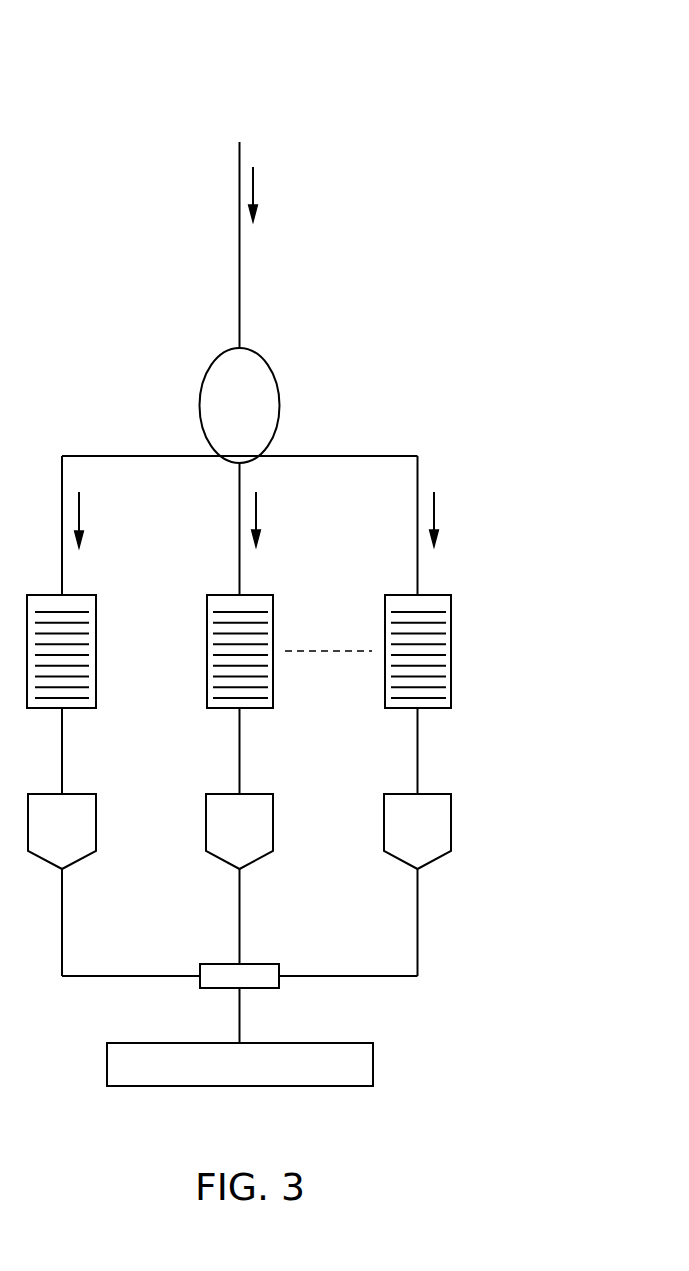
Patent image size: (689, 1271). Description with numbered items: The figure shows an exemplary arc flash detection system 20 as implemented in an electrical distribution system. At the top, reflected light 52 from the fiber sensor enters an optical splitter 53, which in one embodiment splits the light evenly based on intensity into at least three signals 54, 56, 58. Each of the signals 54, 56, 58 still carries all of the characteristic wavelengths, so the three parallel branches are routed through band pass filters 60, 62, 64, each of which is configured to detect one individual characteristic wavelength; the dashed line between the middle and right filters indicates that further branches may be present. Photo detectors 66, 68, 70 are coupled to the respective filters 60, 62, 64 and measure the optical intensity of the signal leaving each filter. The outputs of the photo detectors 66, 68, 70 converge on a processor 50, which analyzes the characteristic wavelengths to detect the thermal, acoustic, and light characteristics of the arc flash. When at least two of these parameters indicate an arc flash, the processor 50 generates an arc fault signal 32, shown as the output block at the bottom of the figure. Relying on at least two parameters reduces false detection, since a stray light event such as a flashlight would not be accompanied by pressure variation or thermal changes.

The arc flash detection system 20 is at (542, 67).
The reflected light 52 is at (254, 187).
The optical splitter 53 is at (280, 392).
The first signal 54 is at (80, 503).
The second signal 56 is at (257, 503).
The third signal 58 is at (435, 503).
The first band pass filter 60 is at (97, 606).
The second band pass filter 62 is at (274, 606).
The third band pass filter 64 is at (452, 606).
The first photo detector 66 is at (97, 804).
The second photo detector 68 is at (274, 804).
The third photo detector 70 is at (452, 804).
The processor 50 is at (264, 963).
The arc fault signal 32 is at (374, 1065).